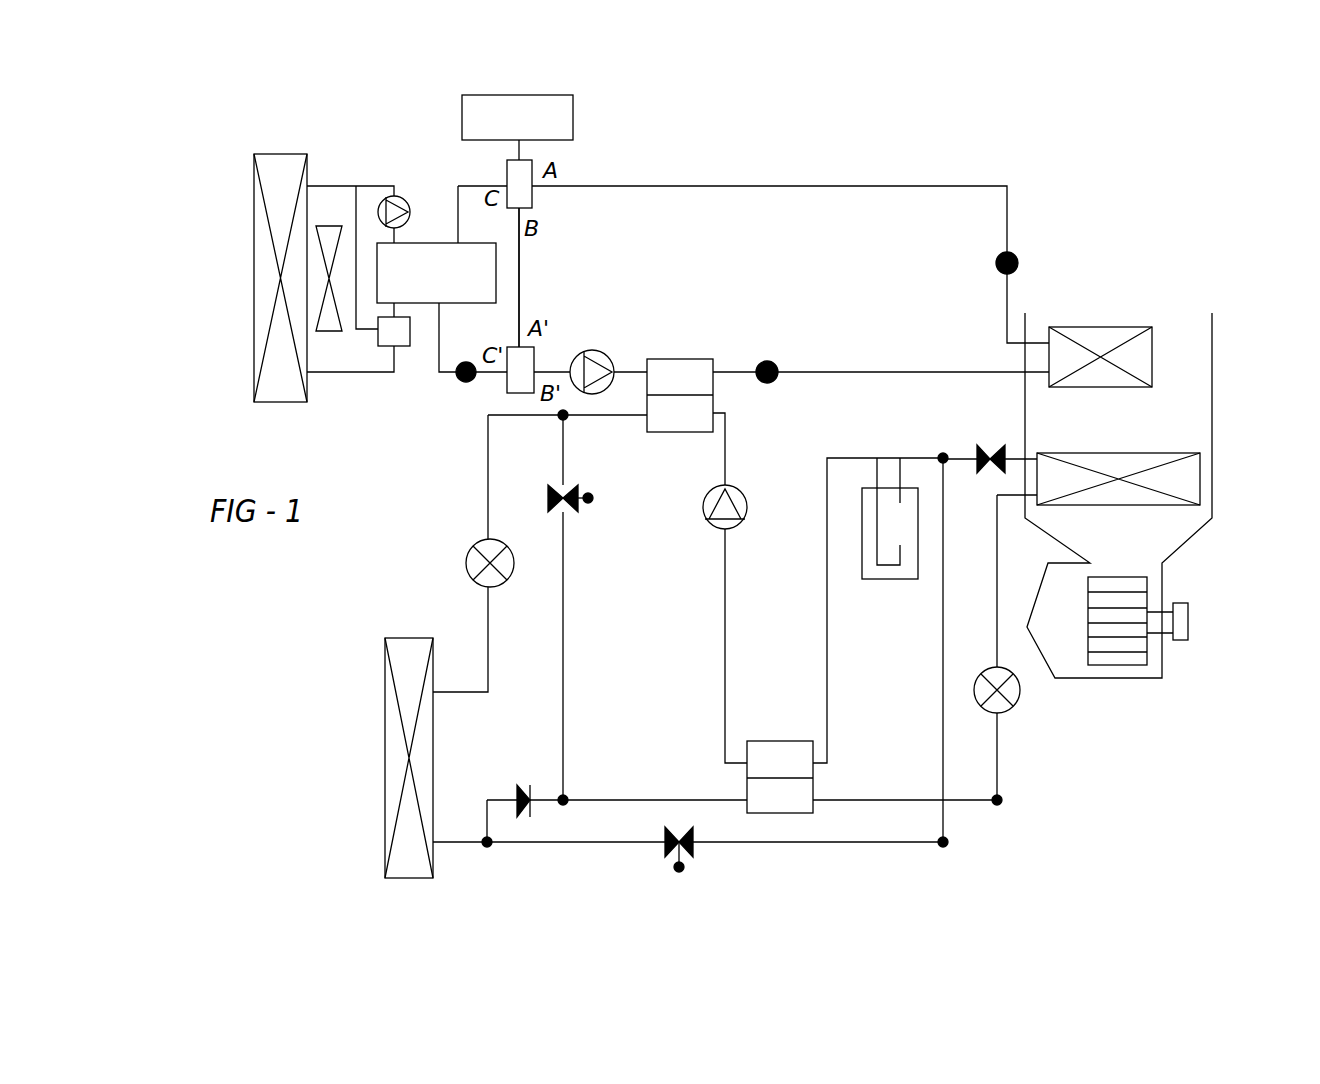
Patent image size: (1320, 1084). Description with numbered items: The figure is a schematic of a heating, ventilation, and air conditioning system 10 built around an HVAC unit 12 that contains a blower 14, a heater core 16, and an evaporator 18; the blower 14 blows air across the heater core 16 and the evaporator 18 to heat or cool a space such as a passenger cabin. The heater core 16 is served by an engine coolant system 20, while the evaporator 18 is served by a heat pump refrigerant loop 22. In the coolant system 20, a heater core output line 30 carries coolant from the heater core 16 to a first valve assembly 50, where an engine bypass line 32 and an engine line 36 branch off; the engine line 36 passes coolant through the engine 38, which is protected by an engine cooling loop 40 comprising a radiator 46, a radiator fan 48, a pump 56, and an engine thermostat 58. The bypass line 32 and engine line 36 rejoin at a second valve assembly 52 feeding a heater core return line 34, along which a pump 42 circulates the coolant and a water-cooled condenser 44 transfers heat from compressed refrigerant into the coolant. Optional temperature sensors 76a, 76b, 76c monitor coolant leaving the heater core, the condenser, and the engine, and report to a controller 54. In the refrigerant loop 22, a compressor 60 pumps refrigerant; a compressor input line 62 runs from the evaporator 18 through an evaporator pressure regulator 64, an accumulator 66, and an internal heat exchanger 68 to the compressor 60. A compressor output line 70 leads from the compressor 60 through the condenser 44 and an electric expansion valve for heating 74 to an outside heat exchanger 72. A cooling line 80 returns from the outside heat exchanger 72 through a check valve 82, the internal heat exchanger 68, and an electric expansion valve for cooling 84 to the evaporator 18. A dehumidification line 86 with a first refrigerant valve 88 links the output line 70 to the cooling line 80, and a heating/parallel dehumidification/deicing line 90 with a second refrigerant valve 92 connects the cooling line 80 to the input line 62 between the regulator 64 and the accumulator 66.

The HVAC system 10 is at (223, 131).
The HVAC unit 12 is at (1112, 678).
The blower 14 is at (1130, 630).
The heater core 16 is at (1105, 327).
The evaporator 18 is at (1195, 475).
The engine coolant system 20 is at (988, 151).
The heat pump refrigerant loop 22 is at (1014, 824).
The heater core output line 30 is at (790, 185).
The engine bypass line 32 is at (521, 280).
The heater core return line 34 is at (828, 362).
The engine line 36 is at (477, 185).
The engine 38 is at (431, 243).
The engine cooling loop 40 is at (325, 392).
The pump 42 is at (600, 350).
The water-cooled condenser 44 is at (680, 359).
The radiator 46 is at (254, 213).
The radiator fan 48 is at (329, 226).
The first valve assembly 50 is at (540, 152).
The second valve assembly 52 is at (500, 384).
The controller 54 is at (573, 113).
The pump 56 is at (388, 198).
The engine thermostat 58 is at (378, 340).
The compressor 60 is at (747, 507).
The compressor input line 62 is at (725, 615).
The evaporator pressure regulator 64 is at (983, 445).
The accumulator 66 is at (890, 579).
The internal heat exchanger 68 is at (783, 805).
The compressor output line 70 is at (488, 498).
The outside heat exchanger 72 is at (385, 748).
The electric expansion valve for heating 74 is at (466, 572).
The heater core coolant out temperature sensor 76a is at (1018, 260).
The water cooled condenser coolant out temperature sensor 76b is at (770, 360).
The engine coolant out temperature sensor 76c is at (462, 380).
The cooling line 80 is at (613, 800).
The check valve 82 is at (518, 790).
The electric expansion valve for cooling 84 is at (1020, 695).
The dehumidification line 86 is at (563, 633).
The first refrigerant valve 88 is at (570, 510).
The heating/parallel dehumidification/deicing line 90 is at (560, 845).
The second refrigerant valve 92 is at (693, 850).